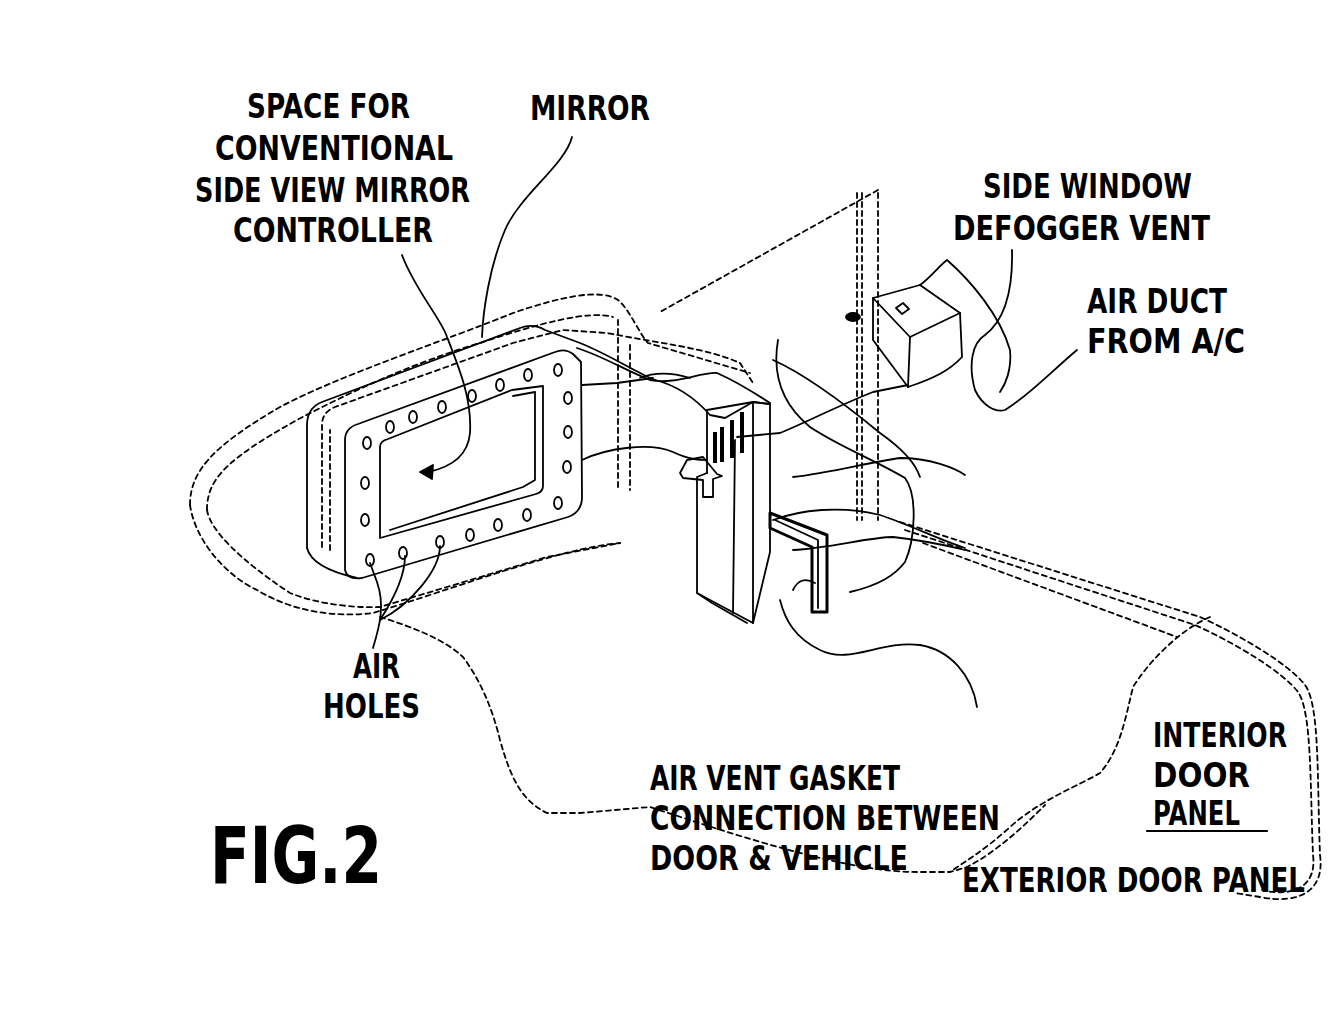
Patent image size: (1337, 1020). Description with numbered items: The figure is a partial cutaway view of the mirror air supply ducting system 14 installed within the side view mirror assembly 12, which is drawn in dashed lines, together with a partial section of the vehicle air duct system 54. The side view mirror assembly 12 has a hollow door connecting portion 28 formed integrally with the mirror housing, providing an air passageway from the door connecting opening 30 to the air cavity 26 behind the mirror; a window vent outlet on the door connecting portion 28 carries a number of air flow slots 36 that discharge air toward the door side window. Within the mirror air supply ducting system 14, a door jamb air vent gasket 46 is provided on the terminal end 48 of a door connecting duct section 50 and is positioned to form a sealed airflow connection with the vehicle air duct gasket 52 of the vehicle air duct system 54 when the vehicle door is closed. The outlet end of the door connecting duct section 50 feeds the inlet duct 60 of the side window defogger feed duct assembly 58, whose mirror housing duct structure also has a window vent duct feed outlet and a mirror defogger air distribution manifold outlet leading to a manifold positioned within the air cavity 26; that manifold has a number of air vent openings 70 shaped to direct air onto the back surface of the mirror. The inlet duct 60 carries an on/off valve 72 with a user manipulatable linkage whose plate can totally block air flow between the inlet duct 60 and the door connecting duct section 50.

The side view mirror assembly 12 is at (219, 461).
The mirror air supply ducting system 14 is at (638, 619).
The air cavity 26 is at (290, 521).
The hollow door connecting portion 28 is at (627, 345).
The door connecting opening 30 is at (753, 422).
The air flow slots 36 is at (743, 560).
The door jamb air vent gasket 46 is at (896, 682).
The terminal end 48 is at (780, 600).
The door connecting duct section 50 is at (703, 593).
The vehicle air duct gasket 52 is at (835, 570).
The vehicle air duct system 54 is at (903, 490).
The side window defogger feed duct assembly 58 is at (657, 418).
The inlet duct 60 is at (713, 507).
The air vent openings 70 is at (362, 485).
The on/off valve 72 is at (780, 477).